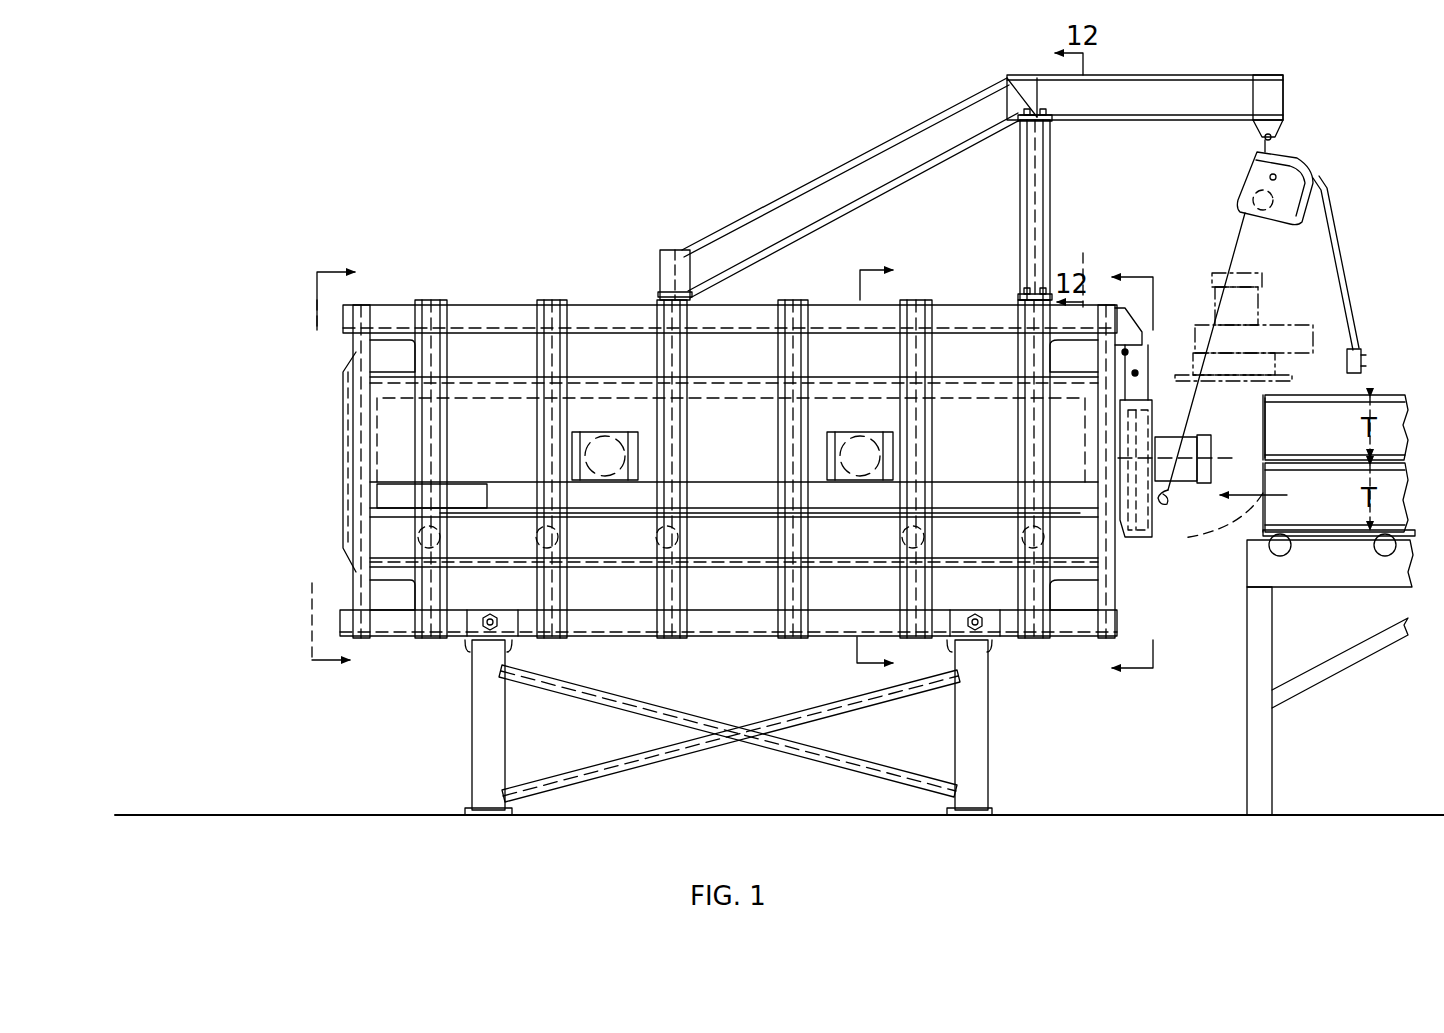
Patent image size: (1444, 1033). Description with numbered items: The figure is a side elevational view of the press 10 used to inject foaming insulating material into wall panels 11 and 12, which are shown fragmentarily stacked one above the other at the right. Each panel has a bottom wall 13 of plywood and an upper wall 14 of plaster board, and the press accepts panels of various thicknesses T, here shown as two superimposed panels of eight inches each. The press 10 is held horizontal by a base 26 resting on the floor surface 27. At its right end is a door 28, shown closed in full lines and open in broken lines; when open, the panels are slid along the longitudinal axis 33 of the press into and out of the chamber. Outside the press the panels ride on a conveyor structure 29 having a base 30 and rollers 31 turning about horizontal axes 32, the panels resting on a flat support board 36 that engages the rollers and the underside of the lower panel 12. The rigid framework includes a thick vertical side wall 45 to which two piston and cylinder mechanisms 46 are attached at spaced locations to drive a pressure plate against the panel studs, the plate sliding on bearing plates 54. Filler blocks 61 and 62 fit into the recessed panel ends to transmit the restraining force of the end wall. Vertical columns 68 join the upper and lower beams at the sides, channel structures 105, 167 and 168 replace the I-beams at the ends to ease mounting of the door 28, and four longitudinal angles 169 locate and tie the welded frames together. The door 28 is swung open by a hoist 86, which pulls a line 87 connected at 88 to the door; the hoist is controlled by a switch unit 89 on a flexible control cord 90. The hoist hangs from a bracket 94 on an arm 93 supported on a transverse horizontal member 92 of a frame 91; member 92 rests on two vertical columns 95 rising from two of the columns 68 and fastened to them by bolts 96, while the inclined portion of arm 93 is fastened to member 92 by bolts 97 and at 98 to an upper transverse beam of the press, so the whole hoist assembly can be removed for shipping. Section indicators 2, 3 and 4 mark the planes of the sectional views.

The press 10 is at (562, 205).
The wall panel 11 is at (1333, 423).
The wall panel 12 is at (1335, 510).
The bottom wall 13 is at (1278, 452).
The upper wall 14 is at (1390, 395).
The base 26 is at (988, 740).
The floor surface 27 is at (1015, 814).
The door 28 is at (1275, 327).
The conveyor structure 29 is at (1225, 600).
The base 30 is at (1247, 695).
The rollers 31 is at (1280, 556).
The axes 32 is at (1355, 587).
The longitudinal axis 33 is at (1068, 455).
The support board 36 is at (1260, 532).
The side wall 45 is at (510, 484).
The piston and cylinder mechanisms 46 is at (634, 465).
The bearing plates 54 is at (870, 517).
The filler block 61 is at (1265, 407).
The filler block 62 is at (1265, 470).
The columns 68 is at (537, 350).
The hoist 86 is at (1328, 162).
The line 87 is at (1235, 240).
The line connection 88 is at (1170, 498).
The switch unit 89 is at (1360, 348).
The control cord 90 is at (1337, 265).
The frame 91 is at (893, 128).
The transverse horizontal member 92 is at (1035, 148).
The arm 93 is at (1128, 88).
The bracket 94 is at (1285, 133).
The vertical columns 95 is at (1020, 240).
The bolts 96 is at (1030, 292).
The bolts 97 is at (1045, 113).
The bolts 98 is at (668, 292).
The channel structure 105 is at (370, 595).
The channel structure 167 is at (387, 353).
The channel structure 168 is at (353, 348).
The longitudinal angles 169 is at (487, 305).
The section line 2- 2 is at (860, 471).
The section line 3- 3 is at (1132, 474).
The section line 4- 4 is at (331, 467).